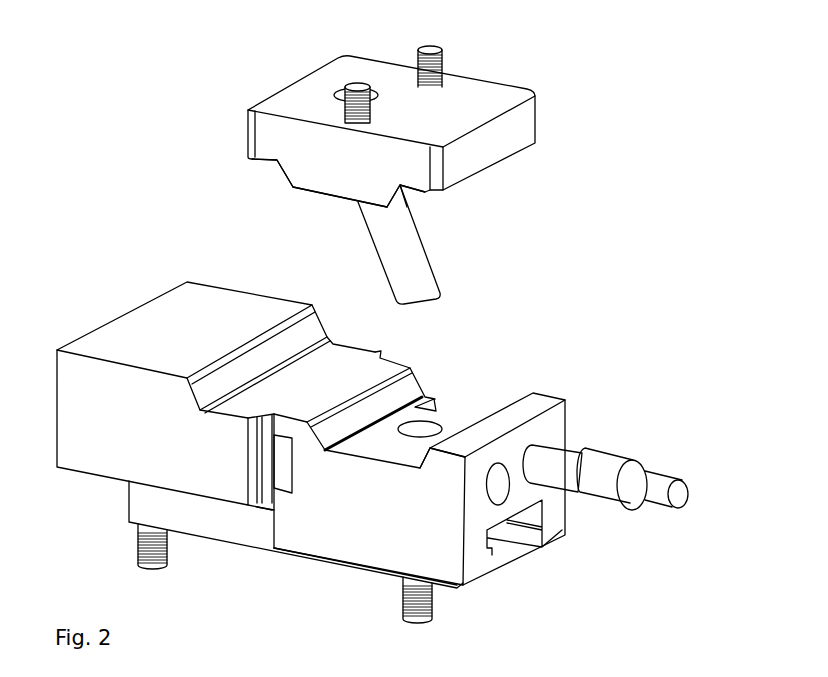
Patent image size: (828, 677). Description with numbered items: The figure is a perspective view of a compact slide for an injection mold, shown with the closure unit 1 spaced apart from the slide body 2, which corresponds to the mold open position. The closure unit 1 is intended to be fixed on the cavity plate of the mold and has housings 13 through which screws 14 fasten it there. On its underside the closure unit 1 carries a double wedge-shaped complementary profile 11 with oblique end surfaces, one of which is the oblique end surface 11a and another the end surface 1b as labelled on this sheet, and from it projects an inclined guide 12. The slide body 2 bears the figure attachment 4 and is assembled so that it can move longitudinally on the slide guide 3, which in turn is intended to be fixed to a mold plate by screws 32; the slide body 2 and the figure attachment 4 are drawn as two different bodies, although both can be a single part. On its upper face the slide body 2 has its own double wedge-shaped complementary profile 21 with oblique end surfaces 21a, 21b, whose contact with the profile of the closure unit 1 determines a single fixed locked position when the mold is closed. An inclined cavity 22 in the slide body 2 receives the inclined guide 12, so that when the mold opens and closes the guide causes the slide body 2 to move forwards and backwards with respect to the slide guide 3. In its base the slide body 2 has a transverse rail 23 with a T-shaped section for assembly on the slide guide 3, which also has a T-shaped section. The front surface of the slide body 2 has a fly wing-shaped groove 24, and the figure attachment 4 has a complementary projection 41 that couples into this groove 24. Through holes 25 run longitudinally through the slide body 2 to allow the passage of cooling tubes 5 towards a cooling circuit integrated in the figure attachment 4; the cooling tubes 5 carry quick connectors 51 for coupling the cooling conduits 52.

The closure unit 1 is at (517, 127).
The step of pressure piece 1b is at (285, 176).
The double wedge-shaped complementary profile 11 is at (343, 202).
The oblique end surface 11a is at (410, 192).
The inclined guide 12 is at (403, 267).
The housings 13 is at (444, 82).
The screws 14 is at (442, 55).
The slide body 2 is at (552, 428).
The double wedge-shaped complementary profile 21 is at (456, 428).
The oblique end surface 21a is at (492, 425).
The oblique end surface 21b is at (403, 392).
The inclined cavity 22 is at (424, 421).
The transverse rail 23 is at (537, 514).
The fly wing-shaped groove 24 is at (290, 470).
The through holes 25 is at (525, 480).
The slide guide 3 is at (280, 556).
The screws 32 is at (160, 558).
The figure attachment 4 is at (155, 318).
The projection 41 is at (285, 455).
The cooling tubes 5 is at (562, 458).
The quick connectors 51 is at (618, 458).
The cooling conduits 52 is at (662, 472).